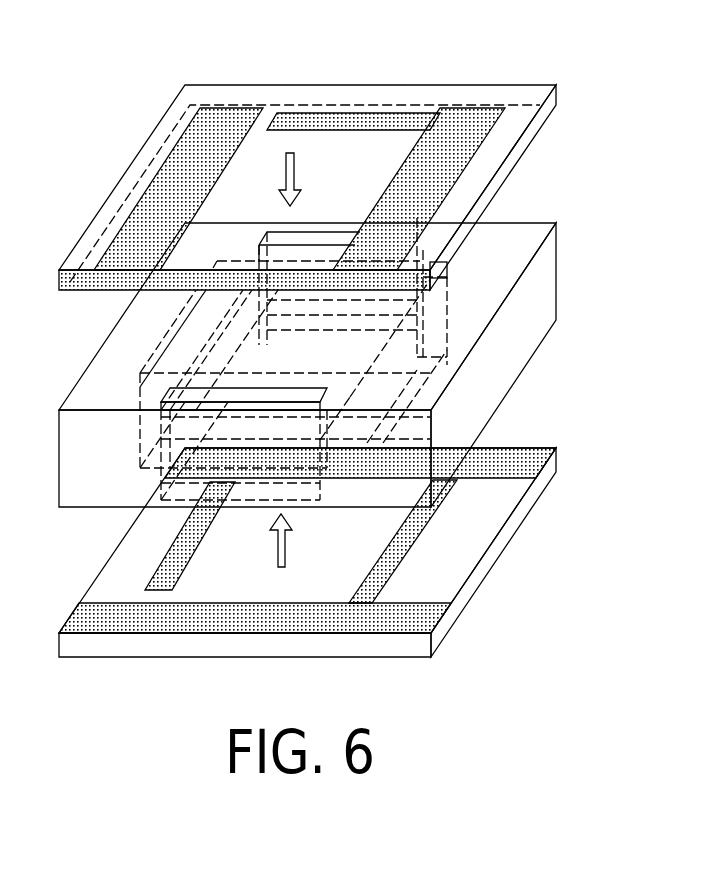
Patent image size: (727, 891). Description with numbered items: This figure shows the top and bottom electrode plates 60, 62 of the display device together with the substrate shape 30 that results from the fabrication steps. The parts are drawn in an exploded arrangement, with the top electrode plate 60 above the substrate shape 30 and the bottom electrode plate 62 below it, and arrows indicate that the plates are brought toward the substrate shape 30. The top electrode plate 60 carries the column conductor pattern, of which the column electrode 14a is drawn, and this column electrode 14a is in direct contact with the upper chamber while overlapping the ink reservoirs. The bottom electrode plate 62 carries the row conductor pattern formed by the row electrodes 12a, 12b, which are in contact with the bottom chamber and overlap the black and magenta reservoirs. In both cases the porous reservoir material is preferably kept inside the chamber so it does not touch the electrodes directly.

The top electrode plate 60 is at (512, 162).
The column electrode 14a is at (470, 113).
The substrate shape 30 is at (543, 296).
The bottom electrode plate 62 is at (513, 523).
The row electrode 12a is at (420, 612).
The row electrode 12b is at (530, 452).